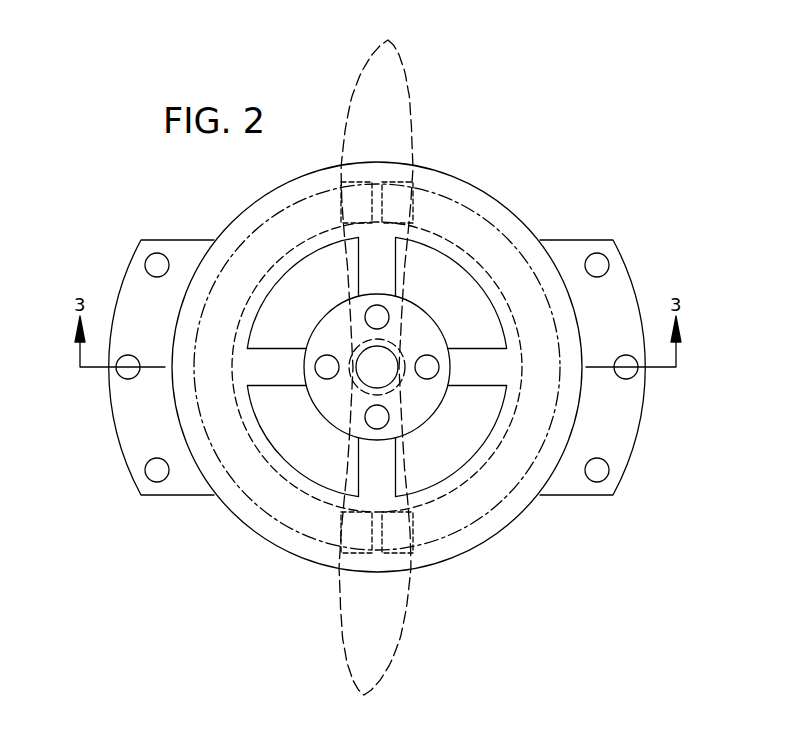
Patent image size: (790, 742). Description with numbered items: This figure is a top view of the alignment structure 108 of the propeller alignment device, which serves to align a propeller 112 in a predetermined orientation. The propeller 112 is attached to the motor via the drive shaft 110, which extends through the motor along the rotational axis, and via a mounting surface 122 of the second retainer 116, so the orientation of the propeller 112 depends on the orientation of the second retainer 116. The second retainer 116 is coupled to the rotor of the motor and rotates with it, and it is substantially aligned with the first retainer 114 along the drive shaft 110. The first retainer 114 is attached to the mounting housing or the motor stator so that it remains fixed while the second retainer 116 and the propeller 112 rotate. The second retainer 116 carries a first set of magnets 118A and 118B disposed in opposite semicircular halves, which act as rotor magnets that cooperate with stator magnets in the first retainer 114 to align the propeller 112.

The alignment structure 108 is at (660, 200).
The drive shaft 110 is at (356, 360).
The propeller 112 is at (415, 140).
The first retainer 114 is at (138, 437).
The second retainer 116 is at (232, 510).
The first set of magnets 118A is at (483, 206).
The first set of magnets 118B is at (278, 210).
The mounting surface 122 is at (417, 410).